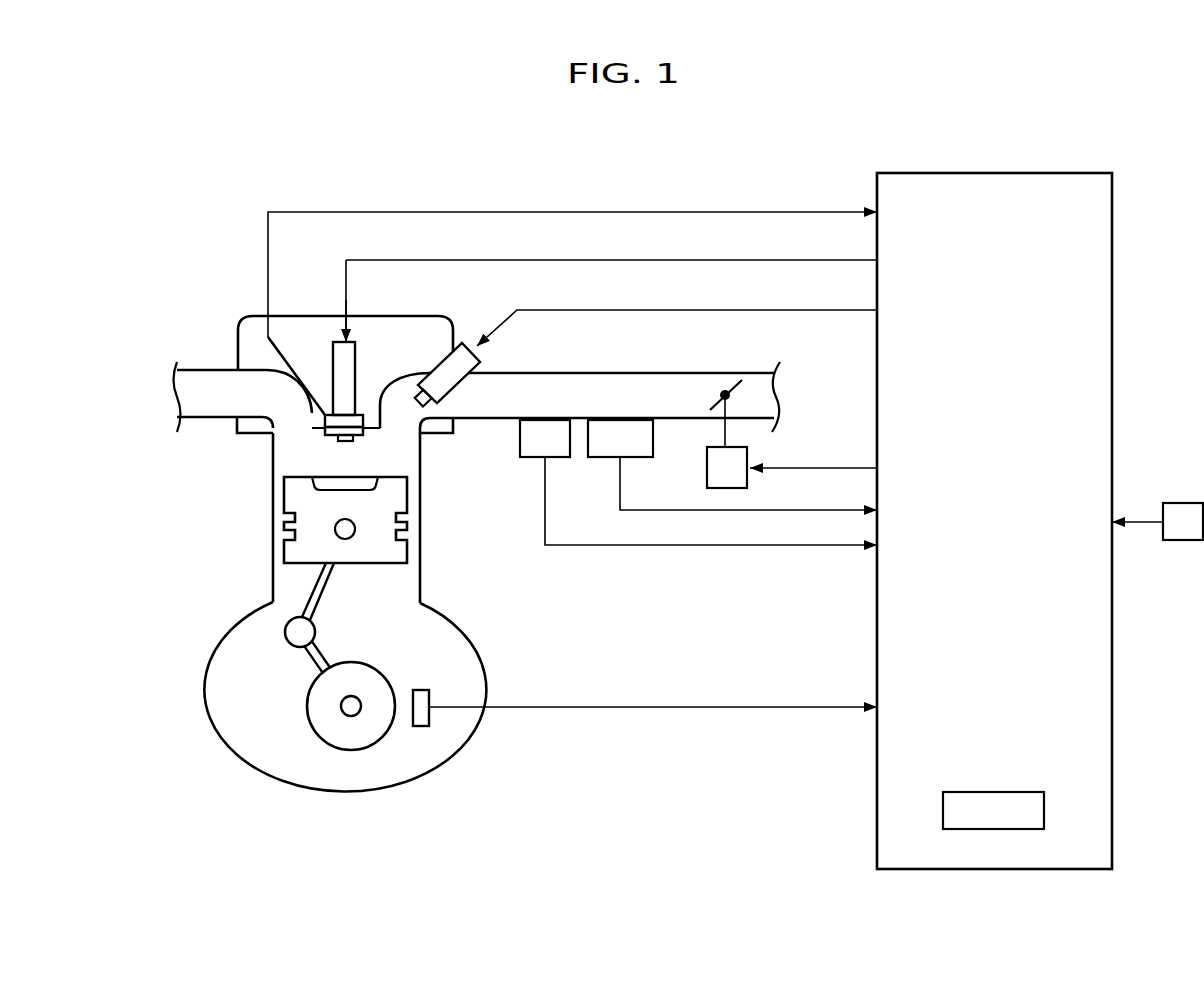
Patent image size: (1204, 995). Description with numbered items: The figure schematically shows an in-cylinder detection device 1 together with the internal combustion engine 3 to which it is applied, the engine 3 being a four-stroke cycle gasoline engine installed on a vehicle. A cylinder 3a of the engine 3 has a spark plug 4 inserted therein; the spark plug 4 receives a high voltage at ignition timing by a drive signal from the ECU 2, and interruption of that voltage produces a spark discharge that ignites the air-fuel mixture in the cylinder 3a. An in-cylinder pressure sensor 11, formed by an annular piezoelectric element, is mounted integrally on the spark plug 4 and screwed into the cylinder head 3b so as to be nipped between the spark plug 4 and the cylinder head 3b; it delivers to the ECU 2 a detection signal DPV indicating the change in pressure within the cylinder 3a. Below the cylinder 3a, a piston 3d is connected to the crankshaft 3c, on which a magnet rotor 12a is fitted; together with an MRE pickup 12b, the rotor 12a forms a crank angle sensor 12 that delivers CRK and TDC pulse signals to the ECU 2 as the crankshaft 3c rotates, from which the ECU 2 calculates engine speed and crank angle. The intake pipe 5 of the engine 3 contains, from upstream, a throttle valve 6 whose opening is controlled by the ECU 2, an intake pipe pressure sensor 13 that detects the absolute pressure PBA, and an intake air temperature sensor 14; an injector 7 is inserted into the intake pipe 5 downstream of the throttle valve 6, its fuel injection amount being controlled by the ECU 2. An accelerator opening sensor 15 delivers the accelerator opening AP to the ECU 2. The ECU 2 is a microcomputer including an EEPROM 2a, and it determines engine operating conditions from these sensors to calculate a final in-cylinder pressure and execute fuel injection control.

The in-cylinder detection device 1 is at (1153, 160).
The ECU 2 is at (1112, 255).
The EEPROM 2a is at (1044, 803).
The internal combustion engine 3 is at (245, 767).
The cylinder 3a is at (275, 460).
The cylinder head 3b is at (252, 338).
The crankshaft 3c is at (363, 705).
The piston 3d is at (308, 550).
The spark plug 4 is at (337, 340).
The intake pipe 5 is at (557, 372).
The throttle valve 6 is at (740, 377).
The injector 7 is at (462, 340).
The in-cylinder pressure sensor 11 is at (365, 415).
The crank angle sensor 12 is at (592, 768).
The magnet rotor 12a is at (363, 743).
The MRE pickup 12b is at (418, 727).
The intake pipe pressure sensor 13 is at (608, 460).
The intake air temperature sensor 14 is at (517, 443).
The accelerator opening sensor 15 is at (1185, 540).